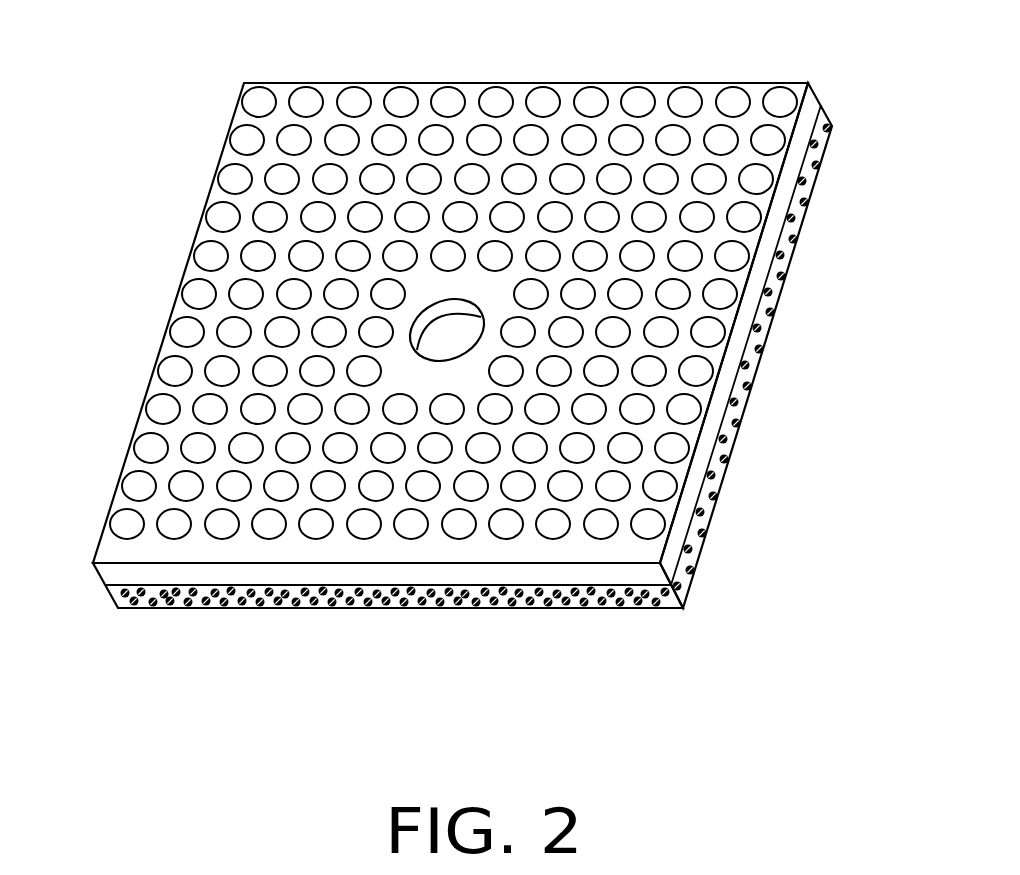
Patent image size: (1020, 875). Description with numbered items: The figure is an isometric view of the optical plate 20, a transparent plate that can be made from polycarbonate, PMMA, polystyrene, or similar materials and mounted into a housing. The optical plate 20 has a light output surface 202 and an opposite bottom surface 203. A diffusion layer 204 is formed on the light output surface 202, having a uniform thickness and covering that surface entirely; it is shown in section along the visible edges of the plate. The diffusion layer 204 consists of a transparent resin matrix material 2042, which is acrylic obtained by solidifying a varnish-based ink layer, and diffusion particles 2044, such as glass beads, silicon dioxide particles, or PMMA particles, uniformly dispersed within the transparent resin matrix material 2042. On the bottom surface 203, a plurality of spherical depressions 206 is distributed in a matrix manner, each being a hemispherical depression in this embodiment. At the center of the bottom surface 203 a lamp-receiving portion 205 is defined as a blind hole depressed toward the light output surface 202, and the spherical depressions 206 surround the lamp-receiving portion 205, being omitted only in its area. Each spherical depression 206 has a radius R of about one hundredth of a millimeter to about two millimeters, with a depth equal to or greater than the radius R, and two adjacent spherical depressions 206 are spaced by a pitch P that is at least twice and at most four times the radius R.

The optical plate 20 is at (202, 124).
The light output surface 202 is at (757, 335).
The bottom surface 203 is at (750, 118).
The diffusion layer 204 is at (645, 686).
The transparent resin matrix material 2042 is at (462, 608).
The diffusion particles 2044 is at (595, 608).
The lamp-receiving portion 205 is at (450, 338).
The spherical depressions 206 is at (173, 375).
The radius R is at (458, 107).
The pitch P is at (610, 52).